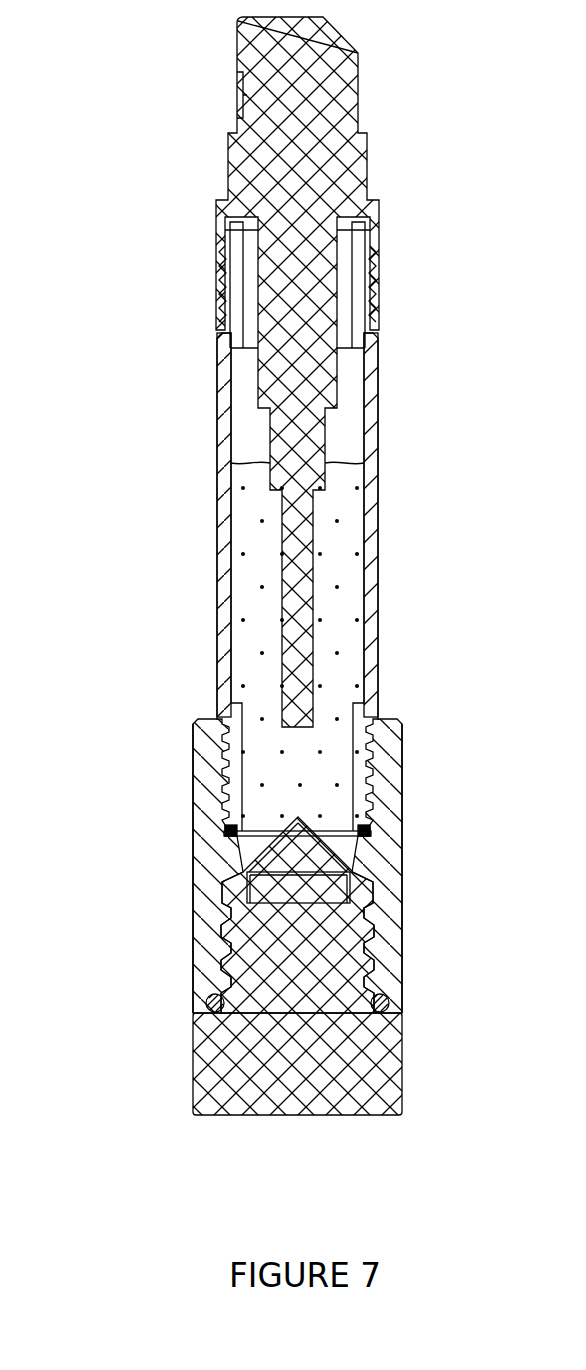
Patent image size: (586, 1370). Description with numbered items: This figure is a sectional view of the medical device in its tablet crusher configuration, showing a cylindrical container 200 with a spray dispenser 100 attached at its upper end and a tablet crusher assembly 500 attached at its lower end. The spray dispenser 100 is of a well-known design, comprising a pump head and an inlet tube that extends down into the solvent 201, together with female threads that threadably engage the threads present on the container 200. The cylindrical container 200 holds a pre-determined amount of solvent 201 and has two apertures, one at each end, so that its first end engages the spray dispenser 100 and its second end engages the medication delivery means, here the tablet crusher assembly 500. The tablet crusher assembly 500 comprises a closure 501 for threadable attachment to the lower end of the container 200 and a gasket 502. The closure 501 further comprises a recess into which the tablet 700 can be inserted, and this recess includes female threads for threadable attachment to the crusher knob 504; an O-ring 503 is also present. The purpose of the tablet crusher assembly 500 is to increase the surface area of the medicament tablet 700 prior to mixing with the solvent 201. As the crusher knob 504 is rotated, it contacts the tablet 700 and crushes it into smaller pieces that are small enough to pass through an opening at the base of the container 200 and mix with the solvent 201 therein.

The spray dispenser 100 is at (229, 172).
The cylindrical container 200 is at (217, 405).
The solvent 201 is at (253, 575).
The tablet crusher assembly 500 is at (193, 753).
The closure 501 is at (193, 790).
The gasket 502 is at (222, 834).
The O-ring 503 is at (193, 1007).
The crusher knob 504 is at (193, 1080).
The tablet 700 is at (305, 887).